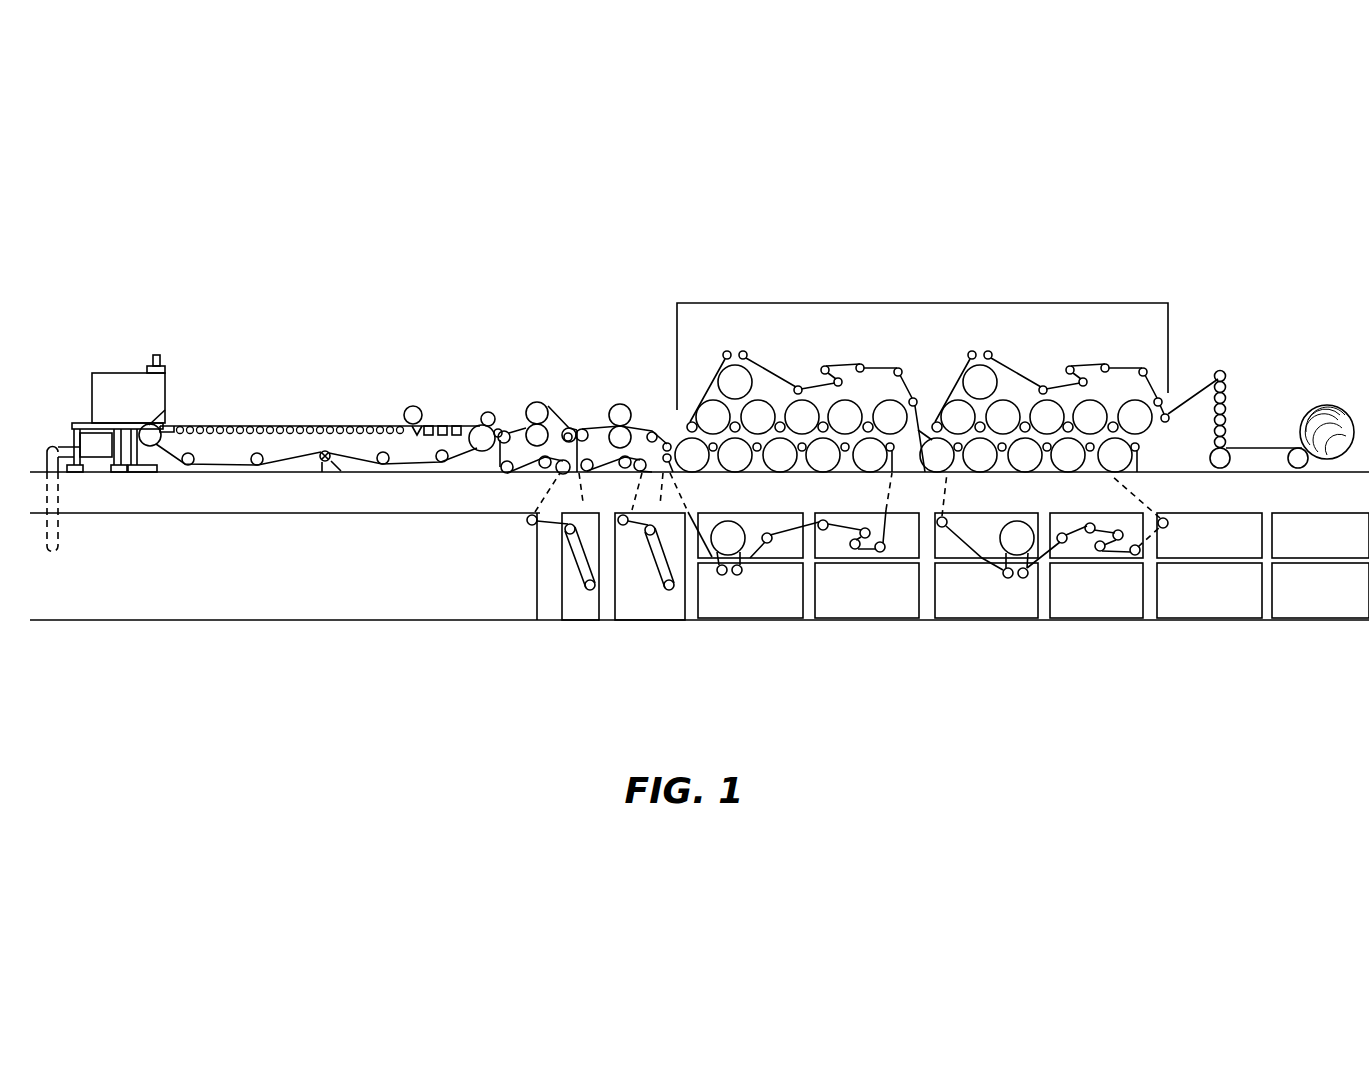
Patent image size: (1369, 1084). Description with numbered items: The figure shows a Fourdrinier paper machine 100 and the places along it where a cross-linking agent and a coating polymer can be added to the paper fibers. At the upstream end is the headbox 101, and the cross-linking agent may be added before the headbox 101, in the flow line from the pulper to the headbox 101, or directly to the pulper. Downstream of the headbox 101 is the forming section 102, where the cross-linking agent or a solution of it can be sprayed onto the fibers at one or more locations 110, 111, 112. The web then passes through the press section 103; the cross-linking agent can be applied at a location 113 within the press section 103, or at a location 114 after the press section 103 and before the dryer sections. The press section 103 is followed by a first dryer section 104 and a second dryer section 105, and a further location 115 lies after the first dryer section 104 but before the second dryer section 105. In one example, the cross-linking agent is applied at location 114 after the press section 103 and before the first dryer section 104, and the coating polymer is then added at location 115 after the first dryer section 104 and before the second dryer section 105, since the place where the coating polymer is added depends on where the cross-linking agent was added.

The paper machine 100 is at (697, 655).
The headbox 101 is at (115, 360).
The forming section 102 is at (317, 356).
The press section 103 is at (561, 347).
The first dryer section 104 is at (813, 292).
The second dryer section 105 is at (1068, 344).
The location 110 is at (235, 390).
The location 111 is at (449, 412).
The location 112 is at (516, 411).
The location 113 is at (591, 411).
The location 114 is at (646, 411).
The location 115 is at (922, 420).